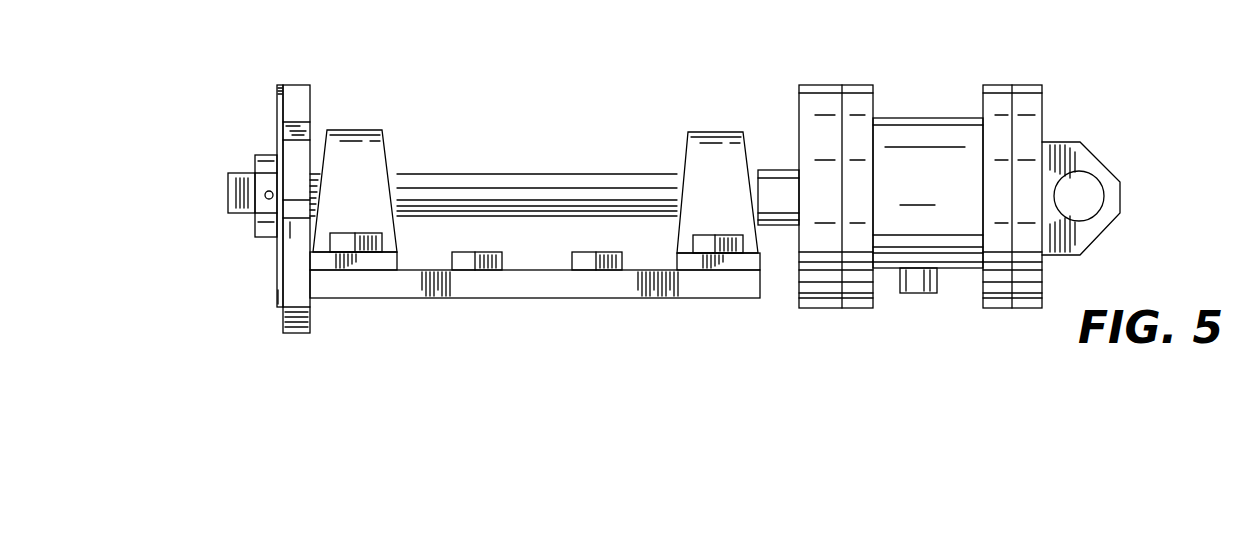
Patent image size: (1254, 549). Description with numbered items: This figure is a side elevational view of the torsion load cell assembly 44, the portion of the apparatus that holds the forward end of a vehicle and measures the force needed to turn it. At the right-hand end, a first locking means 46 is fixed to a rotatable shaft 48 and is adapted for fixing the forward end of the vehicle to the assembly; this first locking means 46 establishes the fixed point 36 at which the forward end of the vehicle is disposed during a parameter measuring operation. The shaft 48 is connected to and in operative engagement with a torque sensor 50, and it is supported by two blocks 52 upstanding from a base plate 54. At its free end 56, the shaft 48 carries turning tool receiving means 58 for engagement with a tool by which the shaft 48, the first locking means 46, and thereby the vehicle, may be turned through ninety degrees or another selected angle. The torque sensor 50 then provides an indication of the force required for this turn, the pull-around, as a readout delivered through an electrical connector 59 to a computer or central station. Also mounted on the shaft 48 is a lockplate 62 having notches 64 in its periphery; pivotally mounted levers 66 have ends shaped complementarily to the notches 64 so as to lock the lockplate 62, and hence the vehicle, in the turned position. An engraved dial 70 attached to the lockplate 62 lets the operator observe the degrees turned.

The torsion load cell assembly 44 is at (747, 53).
The lockplate 62 is at (299, 85).
The notches 64 is at (283, 130).
The turning tool receiving means 58 is at (243, 173).
The free end 56 is at (228, 190).
The levers 66 is at (293, 253).
The engraved dial 70 is at (277, 288).
The blocks 52 is at (360, 130).
The shaft 48 is at (508, 174).
The base plate 54 is at (607, 301).
The torque sensor 50 is at (938, 118).
The electrical connector 59 is at (921, 294).
The first locking means 46 is at (1097, 158).
The fixed point 36 is at (1121, 197).